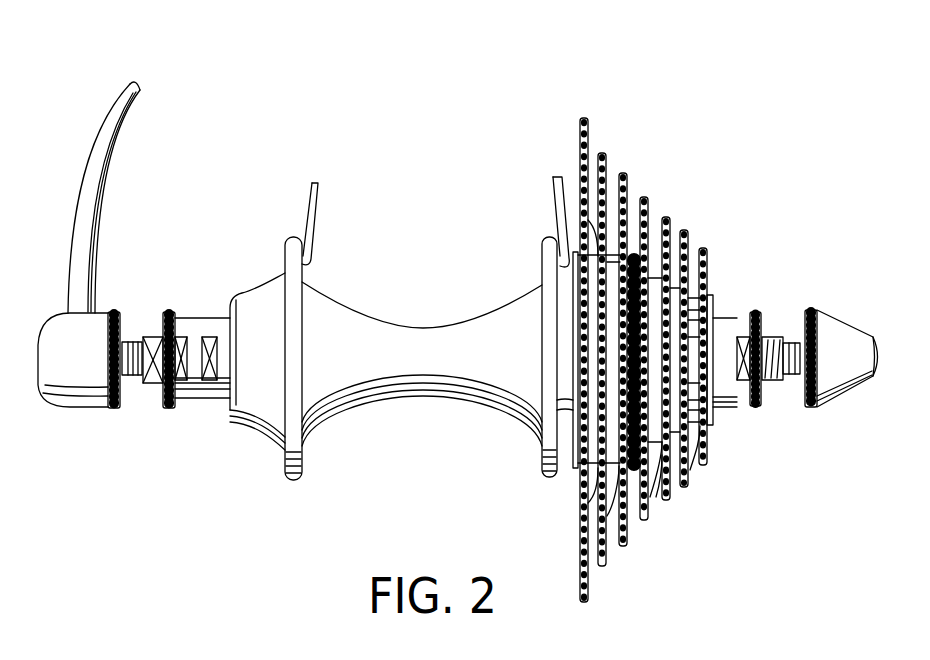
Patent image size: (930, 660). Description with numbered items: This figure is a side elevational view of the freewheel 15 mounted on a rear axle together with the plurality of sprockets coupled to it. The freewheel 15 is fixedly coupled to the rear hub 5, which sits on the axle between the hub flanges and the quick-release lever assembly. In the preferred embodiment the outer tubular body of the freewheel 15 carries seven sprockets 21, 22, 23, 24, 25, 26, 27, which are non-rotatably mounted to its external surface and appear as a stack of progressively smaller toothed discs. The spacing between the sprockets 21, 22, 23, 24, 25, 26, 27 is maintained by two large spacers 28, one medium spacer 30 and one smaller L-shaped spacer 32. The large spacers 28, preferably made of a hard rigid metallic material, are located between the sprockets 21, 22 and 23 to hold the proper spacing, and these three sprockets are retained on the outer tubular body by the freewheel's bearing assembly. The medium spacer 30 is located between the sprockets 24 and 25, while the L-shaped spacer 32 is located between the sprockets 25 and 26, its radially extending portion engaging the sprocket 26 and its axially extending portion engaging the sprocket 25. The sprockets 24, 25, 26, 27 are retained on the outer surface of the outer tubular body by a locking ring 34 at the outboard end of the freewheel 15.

The rear hub 5 is at (423, 328).
The freewheel 15 is at (703, 105).
The sprocket 21 is at (583, 115).
The sprocket 22 is at (602, 150).
The sprocket 23 is at (623, 171).
The sprocket 24 is at (644, 195).
The sprocket 25 is at (667, 215).
The sprocket 26 is at (685, 228).
The sprocket 27 is at (704, 246).
The large spacer 28 is at (598, 516).
The medium spacer 30 is at (653, 486).
The L-shaped spacer 32 is at (689, 467).
The locking ring 34 is at (714, 292).